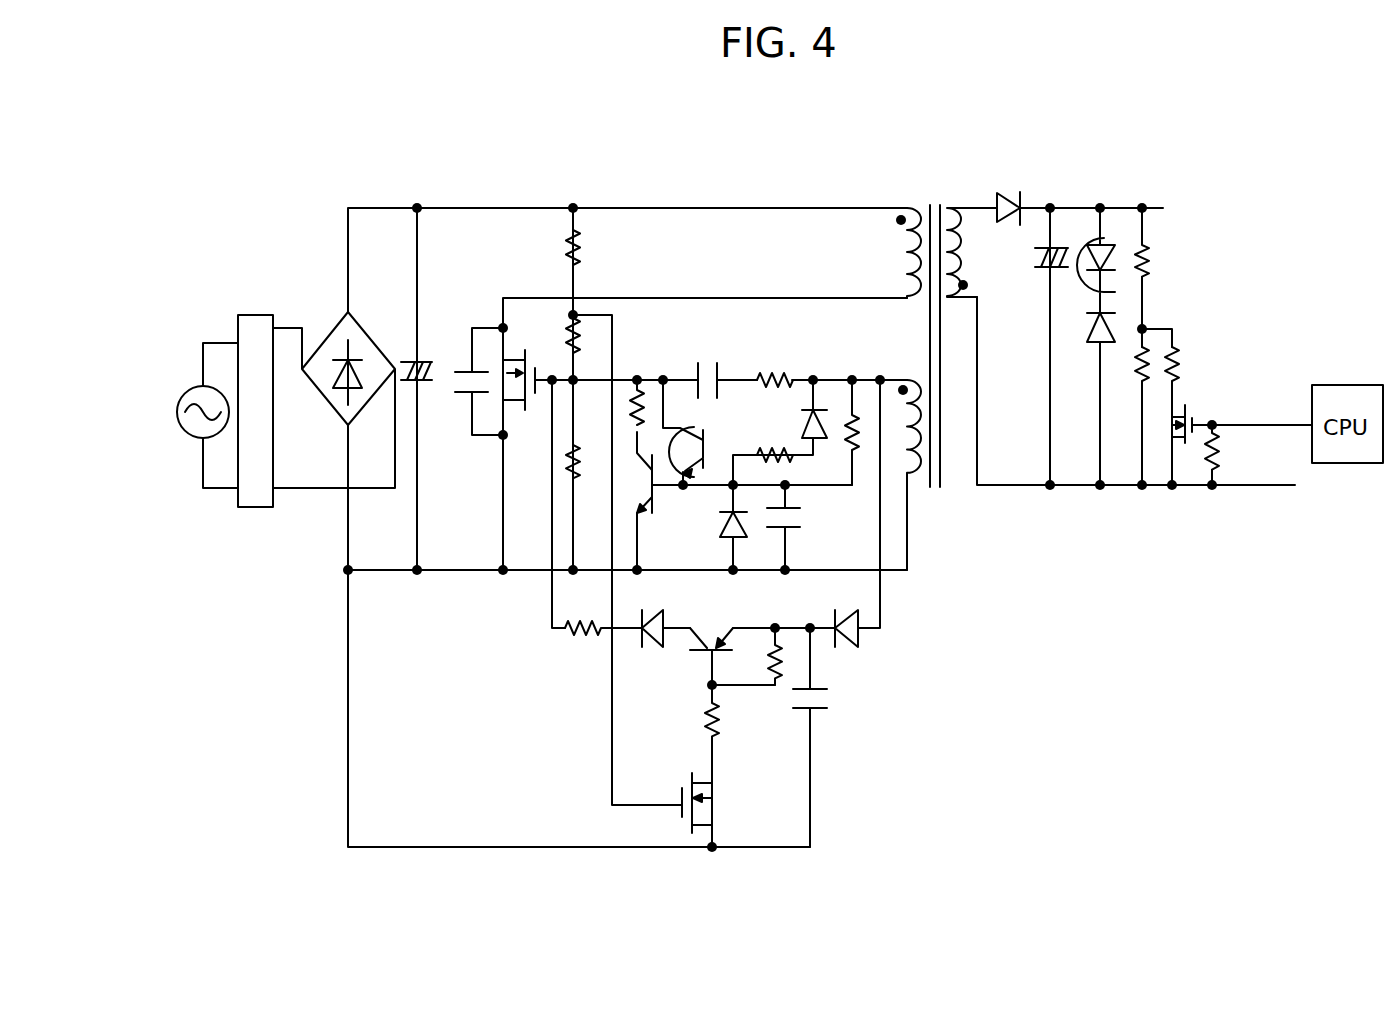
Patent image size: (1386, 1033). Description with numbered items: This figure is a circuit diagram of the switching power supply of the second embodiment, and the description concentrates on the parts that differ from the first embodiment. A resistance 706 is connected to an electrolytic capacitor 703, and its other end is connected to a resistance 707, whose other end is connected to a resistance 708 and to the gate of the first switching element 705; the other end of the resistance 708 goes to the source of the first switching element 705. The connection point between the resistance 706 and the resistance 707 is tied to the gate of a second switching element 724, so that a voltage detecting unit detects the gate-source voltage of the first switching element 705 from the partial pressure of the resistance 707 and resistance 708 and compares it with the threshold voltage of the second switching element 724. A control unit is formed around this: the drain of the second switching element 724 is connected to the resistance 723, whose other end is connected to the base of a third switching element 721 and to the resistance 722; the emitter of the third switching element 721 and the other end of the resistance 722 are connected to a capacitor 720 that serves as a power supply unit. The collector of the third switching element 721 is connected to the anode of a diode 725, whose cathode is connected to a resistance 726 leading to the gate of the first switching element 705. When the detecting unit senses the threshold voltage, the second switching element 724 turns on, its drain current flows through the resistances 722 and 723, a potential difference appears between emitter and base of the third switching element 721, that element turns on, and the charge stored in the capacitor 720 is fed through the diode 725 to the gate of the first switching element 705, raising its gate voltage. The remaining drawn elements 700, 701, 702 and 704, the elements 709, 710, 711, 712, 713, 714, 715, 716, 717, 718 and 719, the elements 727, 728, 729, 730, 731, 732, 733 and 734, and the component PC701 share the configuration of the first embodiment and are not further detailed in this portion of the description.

The AC power supply 700 is at (190, 389).
The filter 701 is at (257, 315).
The rectifier (diode bridge) 702 is at (332, 335).
The electrolytic capacitor 703 is at (431, 358).
The smoothing capacitor 704 is at (464, 404).
The first switching element 705 is at (528, 350).
The resistance 706 is at (566, 249).
The resistance 707 is at (580, 338).
The resistance 708 is at (570, 464).
The transistor 709 is at (654, 492).
The resistor 710 is at (642, 384).
The capacitor 711 is at (706, 362).
The resistor 712 is at (782, 376).
The diode 713 is at (820, 400).
The resistor 714 is at (765, 451).
The diode 715 is at (720, 538).
The capacitor 716 is at (799, 521).
The resistor 717 is at (858, 416).
The transformer 718 is at (932, 205).
The diode 719 is at (860, 634).
The capacitor 720 is at (830, 699).
The third switching element 721 is at (712, 636).
The resistance 722 is at (786, 664).
The resistance 723 is at (706, 722).
The second switching element 724 is at (716, 792).
The diode 725 is at (641, 626).
The resistance 726 is at (580, 640).
The rectifier diode 727 is at (1018, 194).
The varistor 728 is at (1040, 274).
The zener diode 729 is at (1096, 346).
The resistor 730 is at (1151, 266).
The resistor 731 is at (1150, 350).
The resistor 732 is at (1182, 368).
The FET 733 is at (1195, 410).
The resistor 734 is at (1220, 454).
The photocoupler PC701 is at (698, 384).